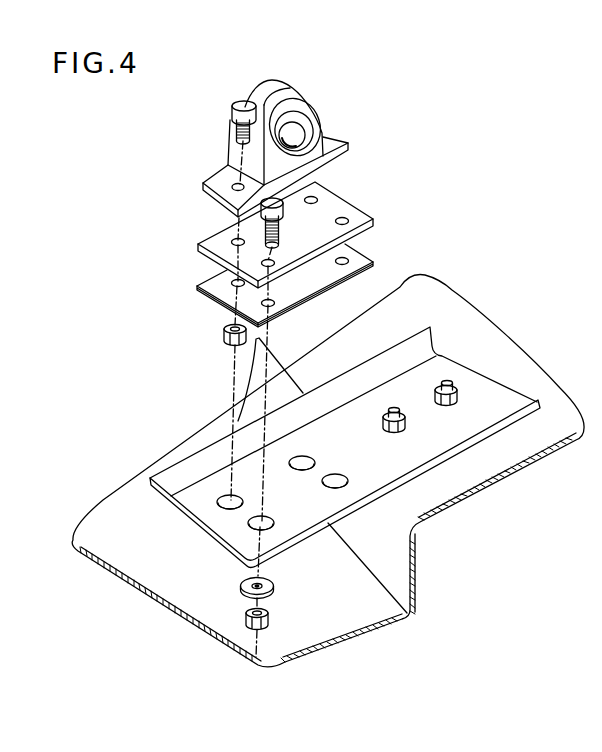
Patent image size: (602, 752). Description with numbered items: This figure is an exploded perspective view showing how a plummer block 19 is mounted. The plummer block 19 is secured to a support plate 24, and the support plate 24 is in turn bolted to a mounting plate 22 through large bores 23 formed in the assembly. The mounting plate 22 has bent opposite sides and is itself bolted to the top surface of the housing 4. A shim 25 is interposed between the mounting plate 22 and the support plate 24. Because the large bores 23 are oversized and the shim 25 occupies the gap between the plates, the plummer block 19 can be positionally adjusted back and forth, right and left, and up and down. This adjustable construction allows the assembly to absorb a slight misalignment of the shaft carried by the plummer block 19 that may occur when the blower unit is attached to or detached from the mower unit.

The housing 4 is at (443, 300).
The plummer block 19 is at (292, 97).
The mounting plate 22 is at (345, 468).
The large bores 23 is at (338, 474).
The support plate 24 is at (344, 208).
The shim 25 is at (374, 263).